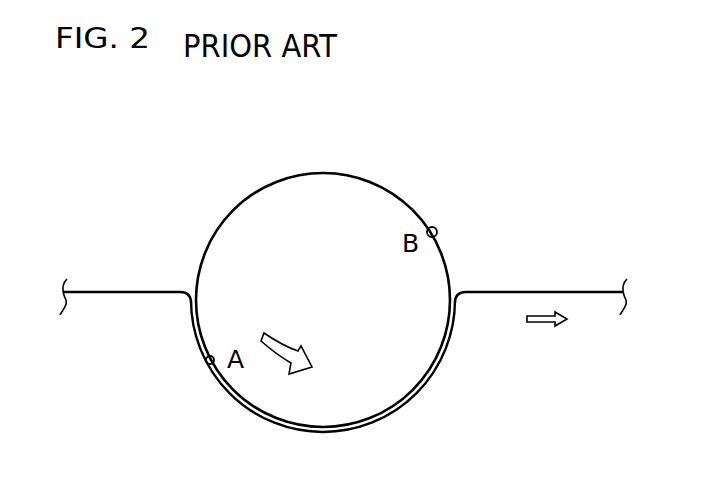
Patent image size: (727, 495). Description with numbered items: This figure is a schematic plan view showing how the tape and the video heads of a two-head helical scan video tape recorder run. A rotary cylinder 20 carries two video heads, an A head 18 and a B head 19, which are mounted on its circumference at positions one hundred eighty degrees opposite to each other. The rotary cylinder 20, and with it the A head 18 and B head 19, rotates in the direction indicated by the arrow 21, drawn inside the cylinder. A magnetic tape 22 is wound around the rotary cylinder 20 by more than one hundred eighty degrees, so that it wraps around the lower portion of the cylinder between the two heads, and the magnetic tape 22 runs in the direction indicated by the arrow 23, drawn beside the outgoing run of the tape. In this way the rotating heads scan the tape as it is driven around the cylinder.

The A head 18 is at (208, 366).
The B head 19 is at (445, 229).
The rotary cylinder 20 is at (334, 173).
The arrow 21 is at (281, 362).
The magnetic tape 22 is at (115, 292).
The arrow 23 is at (538, 326).